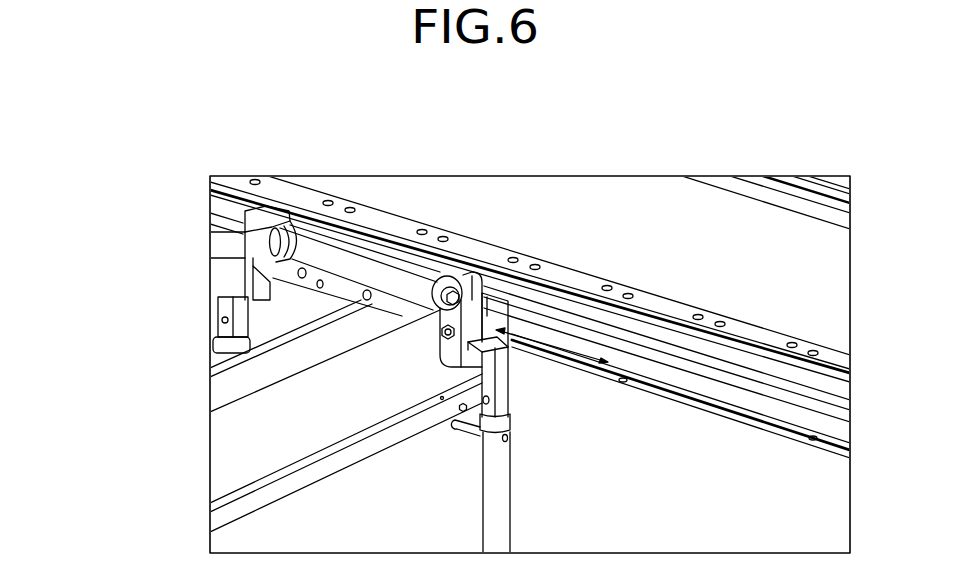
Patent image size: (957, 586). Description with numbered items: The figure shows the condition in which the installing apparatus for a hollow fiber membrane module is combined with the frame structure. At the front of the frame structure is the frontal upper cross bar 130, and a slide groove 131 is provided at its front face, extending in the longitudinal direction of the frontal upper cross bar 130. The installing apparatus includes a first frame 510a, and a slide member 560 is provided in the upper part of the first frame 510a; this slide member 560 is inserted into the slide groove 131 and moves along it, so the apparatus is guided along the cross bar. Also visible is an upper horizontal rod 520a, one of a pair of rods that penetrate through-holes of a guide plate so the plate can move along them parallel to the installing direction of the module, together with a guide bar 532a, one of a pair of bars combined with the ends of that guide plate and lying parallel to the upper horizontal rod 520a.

The frontal upper cross bar 130 is at (613, 317).
The slide groove 131 is at (633, 370).
The slide member 560 is at (386, 296).
The upper horizontal rod 520a is at (222, 396).
The guide bar 532a is at (222, 522).
The first frame 510a is at (512, 501).